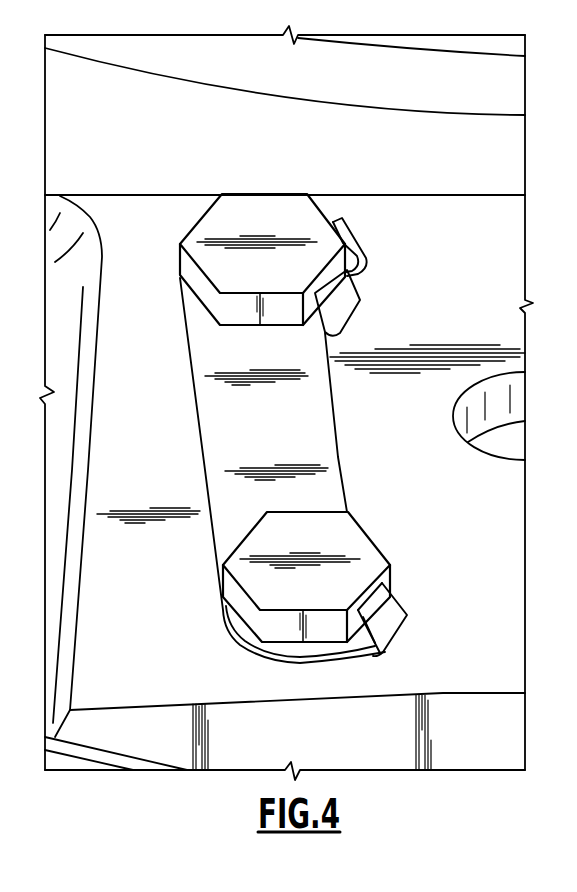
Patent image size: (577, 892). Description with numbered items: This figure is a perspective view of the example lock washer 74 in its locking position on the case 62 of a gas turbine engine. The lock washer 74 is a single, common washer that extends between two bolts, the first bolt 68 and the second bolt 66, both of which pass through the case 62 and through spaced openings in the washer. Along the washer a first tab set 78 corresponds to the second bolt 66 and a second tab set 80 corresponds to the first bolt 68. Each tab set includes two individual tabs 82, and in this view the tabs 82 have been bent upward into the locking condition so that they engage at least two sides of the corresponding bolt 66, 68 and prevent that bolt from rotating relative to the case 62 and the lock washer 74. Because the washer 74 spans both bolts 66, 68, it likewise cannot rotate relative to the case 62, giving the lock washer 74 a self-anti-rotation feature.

The case 62 is at (480, 312).
The second bolt 66 is at (297, 228).
The first bolt 68 is at (267, 587).
The lock washer 74 is at (320, 433).
The first tab set 78 is at (412, 248).
The second tab set 80 is at (430, 581).
The tabs 82 is at (390, 622).